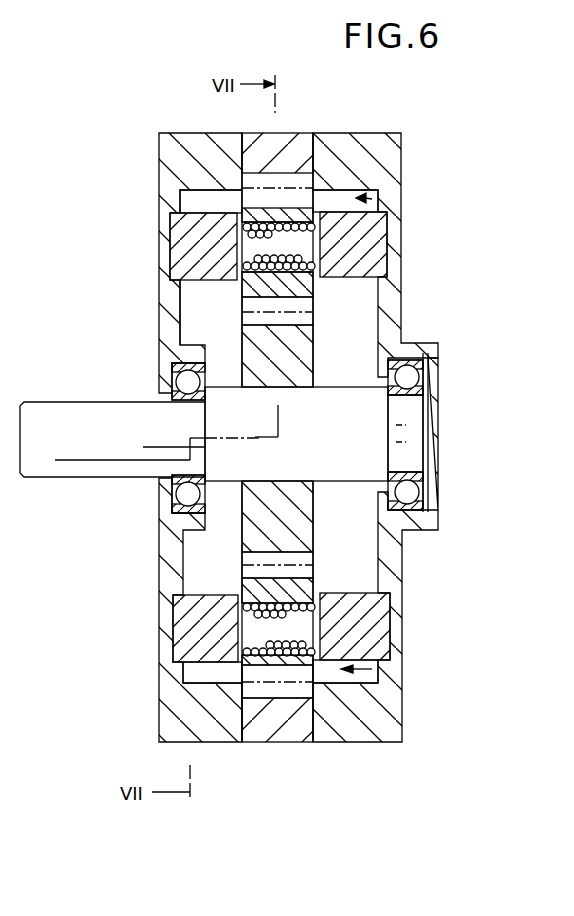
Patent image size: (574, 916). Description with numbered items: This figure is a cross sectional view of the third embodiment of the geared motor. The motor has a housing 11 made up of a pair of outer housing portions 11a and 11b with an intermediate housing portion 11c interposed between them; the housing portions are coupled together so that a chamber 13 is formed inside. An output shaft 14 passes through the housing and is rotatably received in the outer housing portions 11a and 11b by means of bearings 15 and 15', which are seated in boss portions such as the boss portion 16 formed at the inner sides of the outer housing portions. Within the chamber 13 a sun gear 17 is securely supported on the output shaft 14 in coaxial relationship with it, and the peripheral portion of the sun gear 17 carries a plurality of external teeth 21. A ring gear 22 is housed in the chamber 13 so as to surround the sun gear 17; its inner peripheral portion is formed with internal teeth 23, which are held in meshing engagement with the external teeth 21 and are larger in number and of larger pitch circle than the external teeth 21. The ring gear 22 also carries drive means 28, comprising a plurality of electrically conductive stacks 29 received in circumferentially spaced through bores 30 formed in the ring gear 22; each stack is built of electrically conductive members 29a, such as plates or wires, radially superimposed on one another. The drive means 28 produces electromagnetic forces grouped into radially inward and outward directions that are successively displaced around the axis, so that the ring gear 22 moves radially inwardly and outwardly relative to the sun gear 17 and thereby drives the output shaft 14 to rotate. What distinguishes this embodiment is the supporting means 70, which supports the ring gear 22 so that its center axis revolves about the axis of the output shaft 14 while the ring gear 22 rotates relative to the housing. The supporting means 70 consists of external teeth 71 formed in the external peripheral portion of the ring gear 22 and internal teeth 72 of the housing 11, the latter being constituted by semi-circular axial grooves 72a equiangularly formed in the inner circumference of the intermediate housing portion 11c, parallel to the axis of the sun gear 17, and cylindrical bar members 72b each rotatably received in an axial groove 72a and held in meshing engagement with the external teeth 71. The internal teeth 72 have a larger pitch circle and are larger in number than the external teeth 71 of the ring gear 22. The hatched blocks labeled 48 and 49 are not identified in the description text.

The housing 11 is at (159, 211).
The outer housing portion 11a is at (160, 310).
The outer housing portion 11b is at (390, 254).
The intermediate housing portion 11c is at (292, 134).
The chamber 13 is at (234, 341).
The output shaft 14 is at (81, 401).
The bearing 15 is at (166, 438).
The bearing 15' is at (429, 435).
The boss portion 16 is at (212, 562).
The sun gear 17 is at (313, 523).
The external teeth 21 is at (313, 323).
The ring gear 22 is at (313, 590).
The internal teeth 23 is at (312, 303).
The drive means 28 is at (370, 196).
The electrically conductive stacks 29 is at (302, 255).
The electrically conductive members 29a is at (250, 280).
The through bores 30 is at (250, 224).
The left magnet block 48 is at (183, 243).
The right magnet block 49 is at (370, 237).
The supporting means 70 is at (380, 671).
The external teeth 71 is at (258, 667).
The internal teeth 72 is at (283, 704).
The axial grooves 72a is at (310, 698).
The cylindrical bar members 72b is at (243, 695).